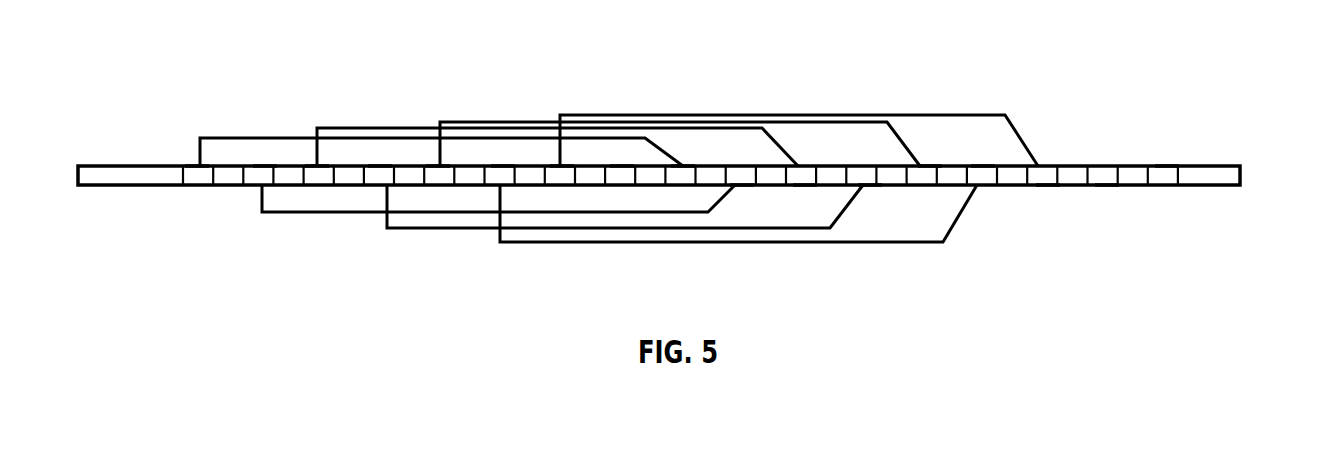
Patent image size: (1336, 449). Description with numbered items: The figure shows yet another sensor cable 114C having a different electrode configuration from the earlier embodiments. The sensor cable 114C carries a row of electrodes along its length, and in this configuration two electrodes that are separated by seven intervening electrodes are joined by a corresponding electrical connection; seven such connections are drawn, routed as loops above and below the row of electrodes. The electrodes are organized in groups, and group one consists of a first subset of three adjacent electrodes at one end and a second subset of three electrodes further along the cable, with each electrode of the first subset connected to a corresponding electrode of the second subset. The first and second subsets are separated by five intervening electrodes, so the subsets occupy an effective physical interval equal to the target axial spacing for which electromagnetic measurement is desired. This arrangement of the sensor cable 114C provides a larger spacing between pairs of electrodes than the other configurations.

The sensor cable 114C is at (1222, 98).